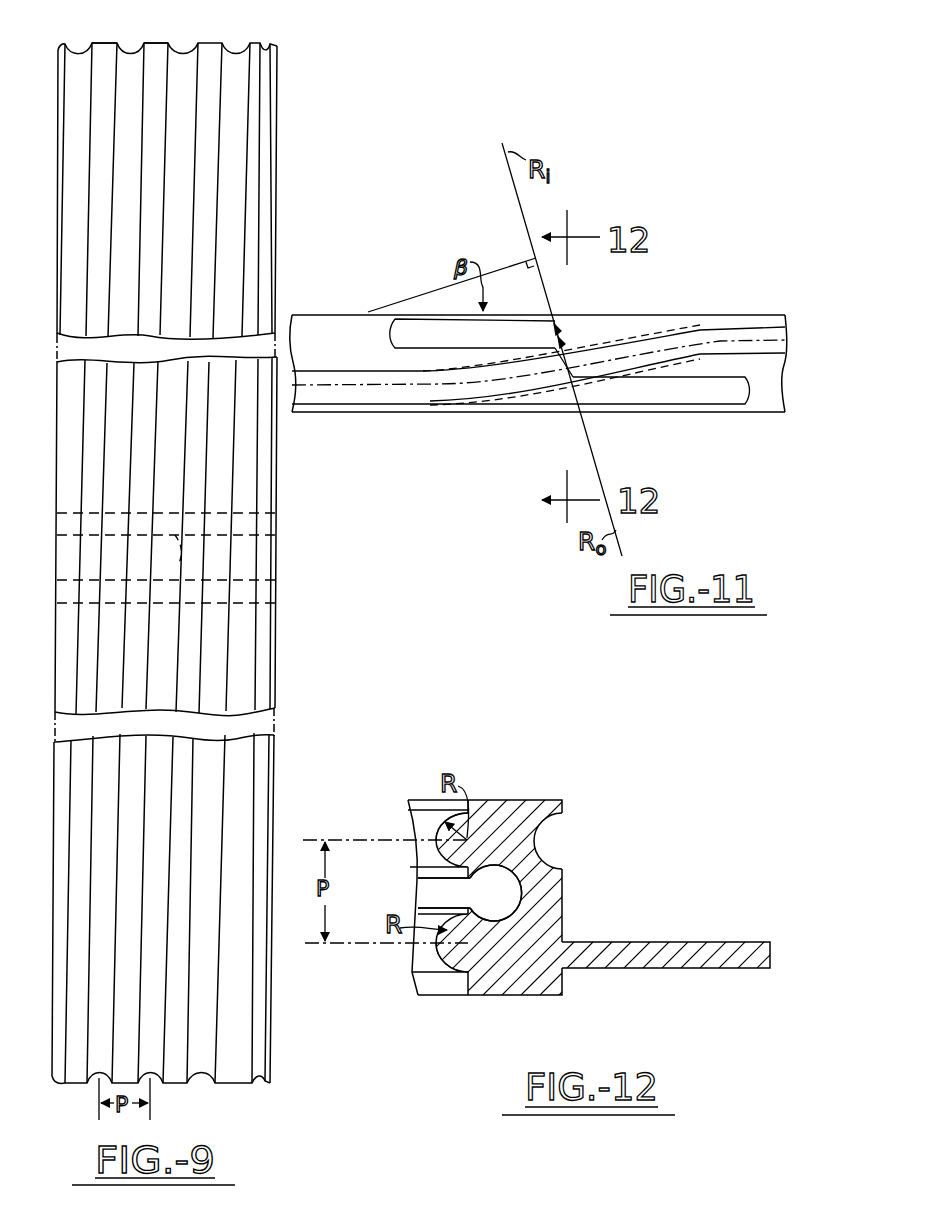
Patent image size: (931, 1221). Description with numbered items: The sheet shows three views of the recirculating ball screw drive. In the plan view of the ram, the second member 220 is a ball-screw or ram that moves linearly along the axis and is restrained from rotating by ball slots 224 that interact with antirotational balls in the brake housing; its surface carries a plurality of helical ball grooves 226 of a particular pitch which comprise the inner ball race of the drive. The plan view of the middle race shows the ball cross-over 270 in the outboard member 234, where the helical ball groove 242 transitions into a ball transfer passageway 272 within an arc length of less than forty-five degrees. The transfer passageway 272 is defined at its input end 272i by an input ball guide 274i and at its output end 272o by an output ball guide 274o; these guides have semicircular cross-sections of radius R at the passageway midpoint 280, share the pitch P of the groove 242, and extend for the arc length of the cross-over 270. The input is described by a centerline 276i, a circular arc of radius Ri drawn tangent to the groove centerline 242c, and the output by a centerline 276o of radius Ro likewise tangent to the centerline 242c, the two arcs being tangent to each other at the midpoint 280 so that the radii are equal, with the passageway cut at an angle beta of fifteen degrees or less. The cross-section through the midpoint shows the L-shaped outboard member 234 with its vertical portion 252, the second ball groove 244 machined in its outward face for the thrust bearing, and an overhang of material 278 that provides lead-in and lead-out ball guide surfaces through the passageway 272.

In FIG. 9, the second member (ram) 220 is at (281, 78).
In FIG. 9, the ball slots 224 is at (155, 580).
In FIG. 9, the helical ball grooves 226 is at (184, 54).
In FIG. 11, the outboard member 234 is at (340, 313).
In FIG. 12, the outboard member 234 is at (590, 996).
In FIG. 12, the helical ball groove 242 is at (520, 899).
In FIG. 11, the groove centerline 242c is at (352, 386).
In FIG. 12, the second ball groove 244 is at (546, 832).
In FIG. 12, the vertical portion 252 is at (690, 970).
In FIG. 11, the ball cross-over 270 is at (536, 301).
In FIG. 11, the ball transfer passageway 272 is at (541, 386).
In FIG. 12, the ball transfer passageway 272 is at (492, 875).
In FIG. 11, the input end of transfer passageway 272i is at (423, 394).
In FIG. 11, the output end of transfer passageway 272o is at (722, 328).
In FIG. 11, the input ball guide 274i is at (565, 392).
In FIG. 12, the input ball guide 274i is at (433, 952).
In FIG. 11, the output ball guide 274o is at (625, 328).
In FIG. 12, the output ball guide 274o is at (436, 831).
In FIG. 11, the input centerline 276i is at (476, 388).
In FIG. 11, the output centerline 276o is at (640, 346).
In FIG. 12, the overhang of material 278 is at (420, 906).
In FIG. 11, the passageway midpoint 280 is at (548, 333).